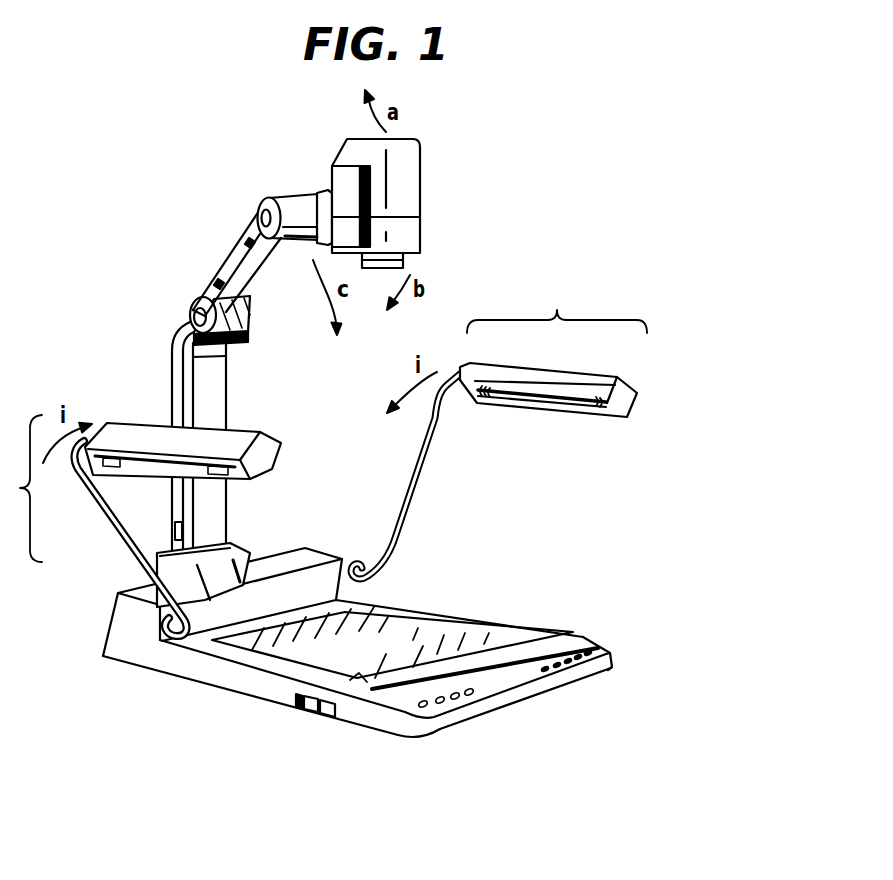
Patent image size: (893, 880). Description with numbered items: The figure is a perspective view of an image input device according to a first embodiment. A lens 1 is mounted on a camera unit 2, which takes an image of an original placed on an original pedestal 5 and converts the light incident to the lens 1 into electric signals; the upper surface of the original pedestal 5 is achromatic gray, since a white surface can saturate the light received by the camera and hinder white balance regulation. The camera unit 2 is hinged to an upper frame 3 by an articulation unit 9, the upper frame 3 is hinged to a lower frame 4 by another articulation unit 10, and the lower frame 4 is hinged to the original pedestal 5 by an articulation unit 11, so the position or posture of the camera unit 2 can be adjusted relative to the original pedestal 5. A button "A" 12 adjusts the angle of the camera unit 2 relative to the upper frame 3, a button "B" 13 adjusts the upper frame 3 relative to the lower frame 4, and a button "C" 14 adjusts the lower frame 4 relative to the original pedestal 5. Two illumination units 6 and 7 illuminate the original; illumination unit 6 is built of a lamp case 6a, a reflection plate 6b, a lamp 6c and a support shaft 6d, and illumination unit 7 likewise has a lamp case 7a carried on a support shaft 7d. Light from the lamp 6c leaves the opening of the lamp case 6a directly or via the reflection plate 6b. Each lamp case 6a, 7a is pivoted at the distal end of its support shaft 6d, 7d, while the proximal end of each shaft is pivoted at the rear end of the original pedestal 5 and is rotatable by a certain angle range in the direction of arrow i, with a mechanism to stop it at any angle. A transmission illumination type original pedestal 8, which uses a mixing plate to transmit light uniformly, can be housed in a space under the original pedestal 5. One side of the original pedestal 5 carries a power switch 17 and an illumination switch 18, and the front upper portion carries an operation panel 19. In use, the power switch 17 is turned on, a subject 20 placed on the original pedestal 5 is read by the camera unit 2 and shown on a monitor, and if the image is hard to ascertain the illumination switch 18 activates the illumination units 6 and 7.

The lens 1 is at (405, 262).
The camera unit 2 is at (402, 164).
The upper frame 3 is at (228, 252).
The lower frame 4 is at (172, 356).
The original pedestal 5 is at (543, 637).
The illumination unit 6 is at (553, 344).
The lamp case 6a is at (483, 372).
The reflection plate 6b is at (545, 403).
The lamp 6c is at (593, 388).
The support shaft 6d is at (425, 462).
The illumination unit 7 is at (22, 488).
The lamp case 7a is at (228, 430).
The support shaft 7d is at (117, 521).
The transmission illumination type original pedestal 8 is at (541, 688).
The articulation unit 9 is at (262, 202).
The articulation unit 10 is at (192, 313).
The articulation unit 11 is at (252, 541).
The button "A" 12 is at (249, 240).
The button "B" 13 is at (218, 284).
The button "C" 14 is at (173, 530).
The power switch 17 is at (328, 714).
The illumination switch 18 is at (300, 708).
The operation panel 19 is at (470, 690).
The subject 20 is at (450, 624).